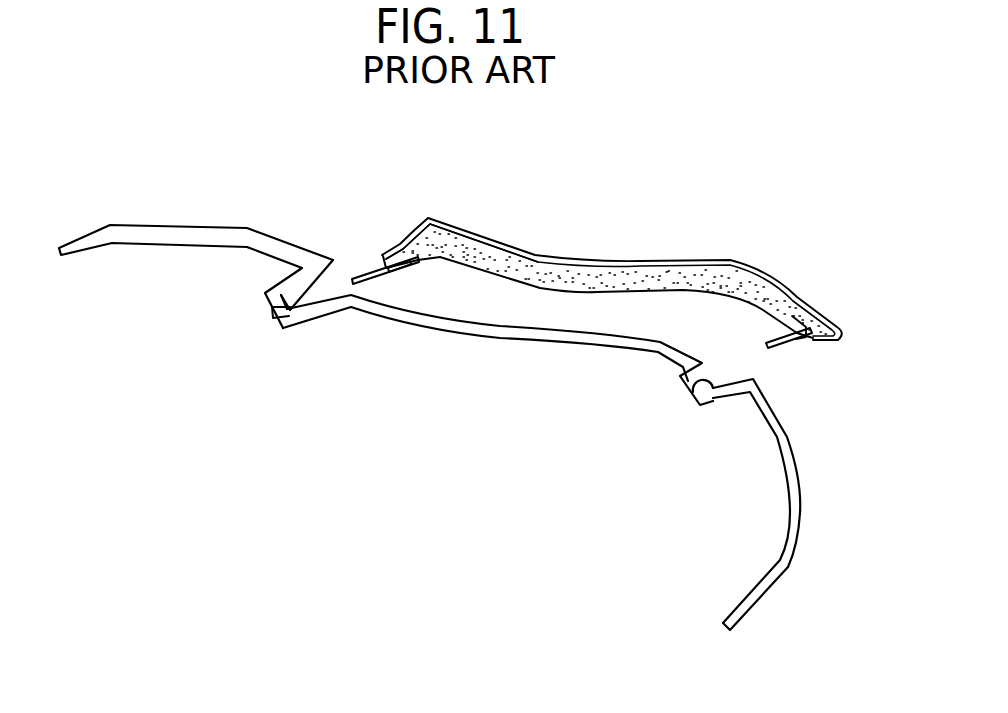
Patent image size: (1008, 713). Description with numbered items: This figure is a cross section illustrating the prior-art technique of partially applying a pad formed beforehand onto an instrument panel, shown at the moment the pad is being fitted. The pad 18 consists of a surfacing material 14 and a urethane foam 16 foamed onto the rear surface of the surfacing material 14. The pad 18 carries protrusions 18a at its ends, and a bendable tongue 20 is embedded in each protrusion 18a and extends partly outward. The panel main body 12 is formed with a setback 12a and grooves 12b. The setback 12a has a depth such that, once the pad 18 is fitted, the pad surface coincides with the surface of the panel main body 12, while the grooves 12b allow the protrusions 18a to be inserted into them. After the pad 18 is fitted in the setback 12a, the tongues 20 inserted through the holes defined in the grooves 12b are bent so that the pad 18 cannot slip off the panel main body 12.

The panel main body 12 is at (177, 208).
The setback 12a is at (498, 338).
The grooves 12b is at (287, 312).
The surfacing material 14 is at (648, 262).
The urethane foam 16 is at (707, 270).
The pad 18 is at (580, 238).
The protrusions 18a is at (398, 243).
The bendable tongue 20 is at (365, 274).